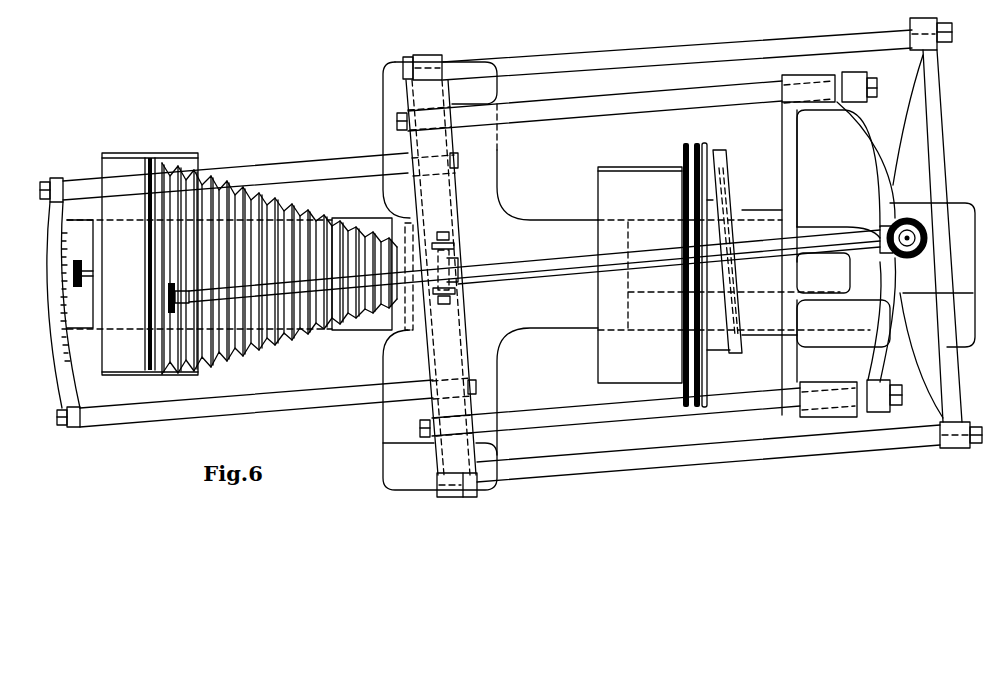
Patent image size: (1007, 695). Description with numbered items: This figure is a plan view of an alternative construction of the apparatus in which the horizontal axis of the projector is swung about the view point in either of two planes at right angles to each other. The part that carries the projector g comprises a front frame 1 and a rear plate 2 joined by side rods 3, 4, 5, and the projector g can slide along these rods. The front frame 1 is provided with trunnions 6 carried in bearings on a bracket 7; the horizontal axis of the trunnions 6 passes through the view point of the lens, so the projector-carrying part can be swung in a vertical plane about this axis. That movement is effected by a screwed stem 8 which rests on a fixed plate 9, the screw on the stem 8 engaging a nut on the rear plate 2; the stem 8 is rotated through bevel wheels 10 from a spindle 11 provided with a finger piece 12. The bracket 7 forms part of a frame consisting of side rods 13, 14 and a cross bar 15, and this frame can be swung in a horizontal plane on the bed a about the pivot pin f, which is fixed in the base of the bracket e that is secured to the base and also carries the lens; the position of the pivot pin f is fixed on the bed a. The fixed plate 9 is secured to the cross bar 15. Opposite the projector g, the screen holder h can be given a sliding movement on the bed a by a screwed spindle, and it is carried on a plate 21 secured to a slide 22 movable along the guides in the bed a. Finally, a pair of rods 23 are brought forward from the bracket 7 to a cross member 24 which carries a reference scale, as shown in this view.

The front frame 1 is at (446, 182).
The rear plate 2 is at (877, 155).
The side rod 3 is at (563, 415).
The side rod 4 is at (583, 268).
The side rod 5 is at (597, 112).
The trunnions 6 is at (466, 490).
The bracket 7 is at (403, 57).
The screwed stem 8 is at (916, 253).
The fixed plate 9 is at (937, 194).
The bevel wheels 10 is at (898, 262).
The spindle 11 is at (527, 271).
The finger piece 12 is at (168, 297).
The side rod 13 is at (609, 52).
The side rod 14 is at (770, 450).
The cross bar 15 is at (958, 237).
The plate 21 is at (707, 152).
The slide 22 is at (645, 328).
The rods 23 is at (314, 402).
The cross member 24 is at (52, 355).
The bed a is at (533, 328).
The bracket e is at (415, 332).
The pivot pin f is at (460, 257).
The projector g is at (752, 210).
The screen holder h is at (652, 175).